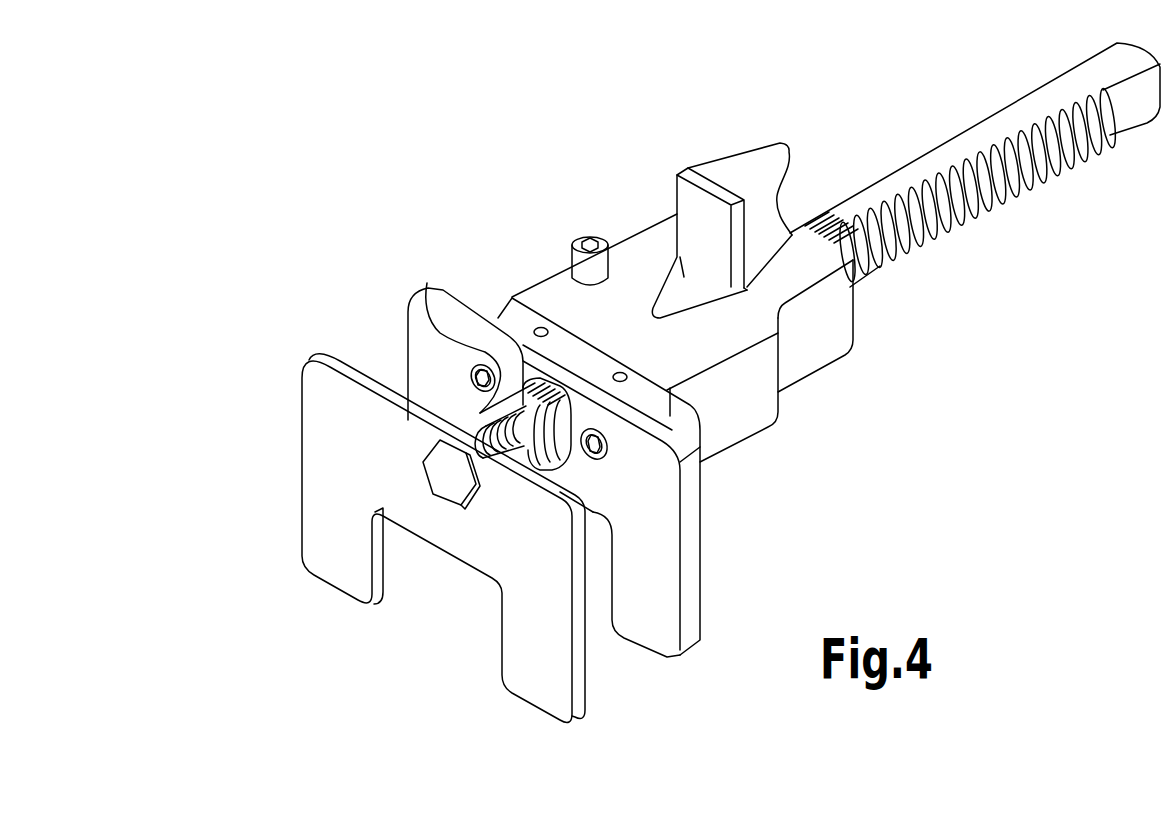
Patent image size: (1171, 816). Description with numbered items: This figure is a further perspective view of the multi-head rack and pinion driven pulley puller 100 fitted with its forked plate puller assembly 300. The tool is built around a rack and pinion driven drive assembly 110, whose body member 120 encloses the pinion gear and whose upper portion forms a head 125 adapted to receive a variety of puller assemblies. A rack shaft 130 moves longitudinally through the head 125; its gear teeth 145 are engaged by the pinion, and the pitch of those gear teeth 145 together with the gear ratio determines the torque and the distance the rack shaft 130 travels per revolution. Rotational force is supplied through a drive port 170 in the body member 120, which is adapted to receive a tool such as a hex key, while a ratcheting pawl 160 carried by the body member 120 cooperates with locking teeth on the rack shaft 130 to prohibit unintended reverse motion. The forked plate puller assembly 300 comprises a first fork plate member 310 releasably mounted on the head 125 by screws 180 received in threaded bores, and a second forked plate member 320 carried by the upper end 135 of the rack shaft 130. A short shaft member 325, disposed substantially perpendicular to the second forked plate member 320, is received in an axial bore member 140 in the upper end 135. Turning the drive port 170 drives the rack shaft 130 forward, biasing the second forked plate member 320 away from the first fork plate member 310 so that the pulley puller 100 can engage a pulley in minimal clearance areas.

The multi-head rack and pinion driven pulley puller 100 is at (348, 171).
The rack and pinion driven drive assembly 110 is at (740, 353).
The body member 120 is at (775, 290).
The head 125 is at (650, 390).
The rack shaft 130 is at (950, 135).
The upper end 135 is at (473, 308).
The axial bore member 140 is at (427, 285).
The gear teeth 145 is at (977, 193).
The ratcheting pawl 160 is at (682, 275).
The drive port 170 is at (572, 255).
The screws 180 is at (683, 495).
The forked plate puller assembly 300 is at (684, 589).
The first fork plate member 310 is at (655, 613).
The second forked plate member 320 is at (340, 512).
The short shaft member 325 is at (480, 413).